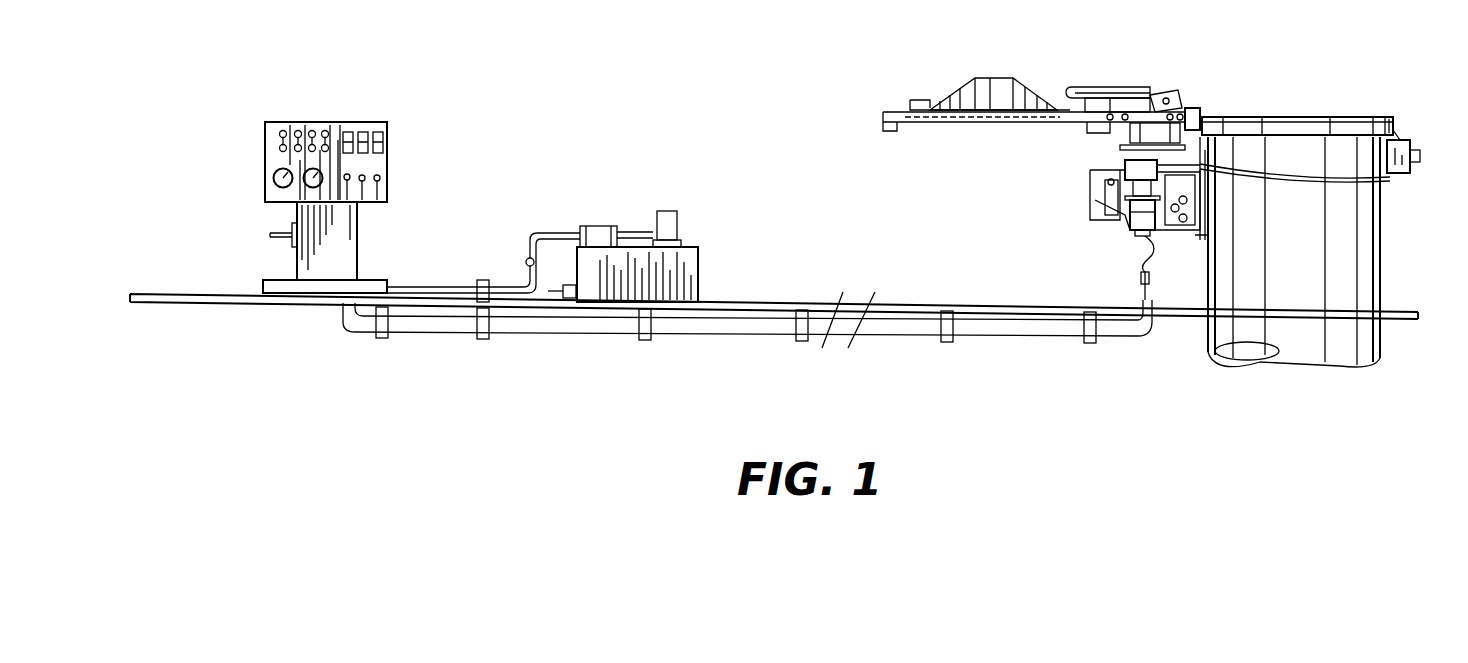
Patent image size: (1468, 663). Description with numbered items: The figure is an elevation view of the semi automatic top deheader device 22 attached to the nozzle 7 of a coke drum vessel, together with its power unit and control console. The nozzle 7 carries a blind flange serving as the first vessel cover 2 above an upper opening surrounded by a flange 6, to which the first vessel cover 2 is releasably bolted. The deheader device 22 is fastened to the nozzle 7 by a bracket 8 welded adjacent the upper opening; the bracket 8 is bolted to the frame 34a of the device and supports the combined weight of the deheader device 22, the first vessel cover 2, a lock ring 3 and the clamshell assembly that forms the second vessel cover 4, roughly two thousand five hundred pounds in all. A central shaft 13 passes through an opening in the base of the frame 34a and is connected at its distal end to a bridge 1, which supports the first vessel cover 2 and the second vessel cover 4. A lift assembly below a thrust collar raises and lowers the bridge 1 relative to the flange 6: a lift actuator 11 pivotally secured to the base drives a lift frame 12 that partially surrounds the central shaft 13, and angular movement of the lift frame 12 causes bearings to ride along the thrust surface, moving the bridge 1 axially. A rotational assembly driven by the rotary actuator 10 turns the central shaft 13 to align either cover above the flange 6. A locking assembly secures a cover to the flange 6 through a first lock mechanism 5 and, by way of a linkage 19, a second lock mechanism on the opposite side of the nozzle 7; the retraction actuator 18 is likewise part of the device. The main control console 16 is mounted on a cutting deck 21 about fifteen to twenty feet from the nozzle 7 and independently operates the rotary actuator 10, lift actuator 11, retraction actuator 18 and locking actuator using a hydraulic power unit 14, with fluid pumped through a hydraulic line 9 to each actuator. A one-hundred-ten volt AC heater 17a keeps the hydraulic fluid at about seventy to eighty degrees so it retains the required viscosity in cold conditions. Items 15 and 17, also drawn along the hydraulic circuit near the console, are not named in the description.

The bridge 1 is at (1150, 95).
The first vessel cover 2 is at (1345, 118).
The lock ring 3 is at (897, 110).
The second vessel cover 4 is at (970, 85).
The first lock mechanism 5 is at (1205, 112).
The flange 6 is at (1385, 125).
The nozzle 7 is at (1378, 232).
The bracket 8 is at (1210, 242).
The hydraulic line 9 is at (1000, 336).
The rotary actuator 10 is at (1130, 232).
The lift actuator 11 is at (1100, 195).
The lift frame 12 is at (1110, 152).
The central shaft 13 is at (1128, 133).
The hydraulic power unit 14 is at (690, 258).
The fitting 15 is at (528, 262).
The main control console 16 is at (388, 152).
The lever 17 is at (270, 235).
The heater 17a is at (568, 285).
The retraction actuator 18 is at (1100, 85).
The linkage 19 is at (1382, 188).
The cutting deck 21 is at (735, 302).
The semi automatic top deheader device 22 is at (1118, 82).
The frame 34a is at (1098, 213).